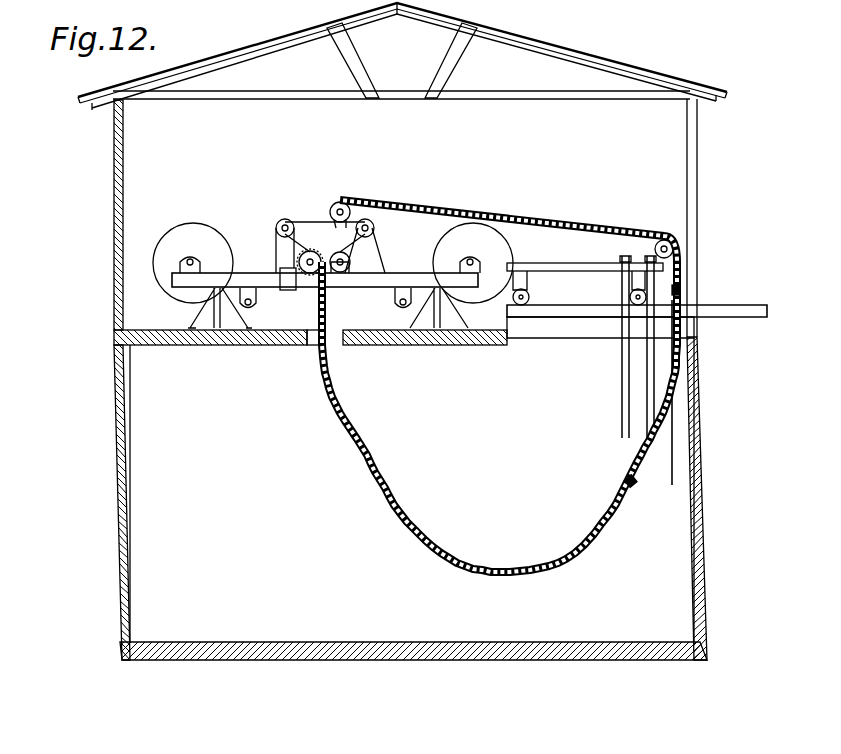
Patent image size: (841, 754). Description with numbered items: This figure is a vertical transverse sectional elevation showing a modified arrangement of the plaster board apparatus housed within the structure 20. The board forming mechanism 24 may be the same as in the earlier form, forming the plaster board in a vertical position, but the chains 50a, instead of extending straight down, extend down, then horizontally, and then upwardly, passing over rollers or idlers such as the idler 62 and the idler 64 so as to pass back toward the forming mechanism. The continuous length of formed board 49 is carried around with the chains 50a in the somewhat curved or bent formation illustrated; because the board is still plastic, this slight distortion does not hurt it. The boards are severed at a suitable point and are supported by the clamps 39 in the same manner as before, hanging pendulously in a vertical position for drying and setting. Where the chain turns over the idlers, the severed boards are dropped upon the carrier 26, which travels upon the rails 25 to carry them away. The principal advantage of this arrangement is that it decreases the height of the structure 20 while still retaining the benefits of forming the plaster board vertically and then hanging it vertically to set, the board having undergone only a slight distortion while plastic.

The structure 20 is at (106, 258).
The board forming mechanism 24 is at (304, 206).
The rails 25 is at (739, 317).
The carrier 26 is at (579, 277).
The clamps 39 is at (684, 276).
The continuous length of formed board 49 is at (465, 550).
The chains 50a is at (412, 490).
The roller or idler 62 is at (342, 204).
The pulley 64 is at (664, 240).